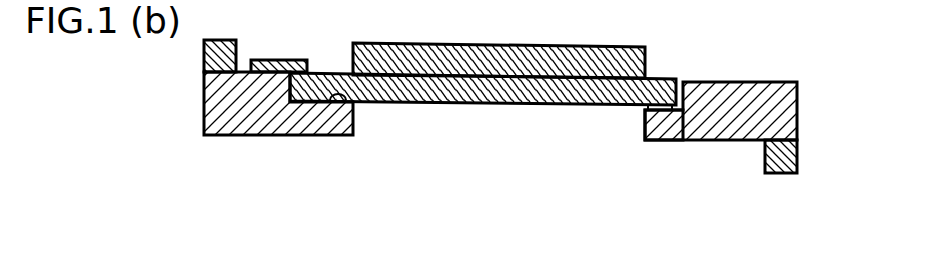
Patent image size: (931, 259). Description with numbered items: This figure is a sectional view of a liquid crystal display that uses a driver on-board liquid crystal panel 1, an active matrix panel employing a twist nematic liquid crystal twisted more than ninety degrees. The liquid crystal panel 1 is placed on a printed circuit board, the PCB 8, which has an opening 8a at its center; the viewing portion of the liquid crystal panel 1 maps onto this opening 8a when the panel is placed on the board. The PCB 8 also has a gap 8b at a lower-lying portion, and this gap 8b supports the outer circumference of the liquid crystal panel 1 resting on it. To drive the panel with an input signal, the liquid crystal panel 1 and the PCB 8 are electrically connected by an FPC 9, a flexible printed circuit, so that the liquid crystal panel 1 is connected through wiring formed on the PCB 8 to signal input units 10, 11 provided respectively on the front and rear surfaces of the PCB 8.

The liquid crystal panel 1 is at (662, 78).
The PCB (printed circuit board) 8 is at (776, 82).
The opening 8a is at (643, 128).
The gap 8b is at (667, 110).
The FPC (flexible printed circuit) 9 is at (274, 59).
The signal input unit 10 is at (207, 63).
The signal input unit 11 is at (797, 167).